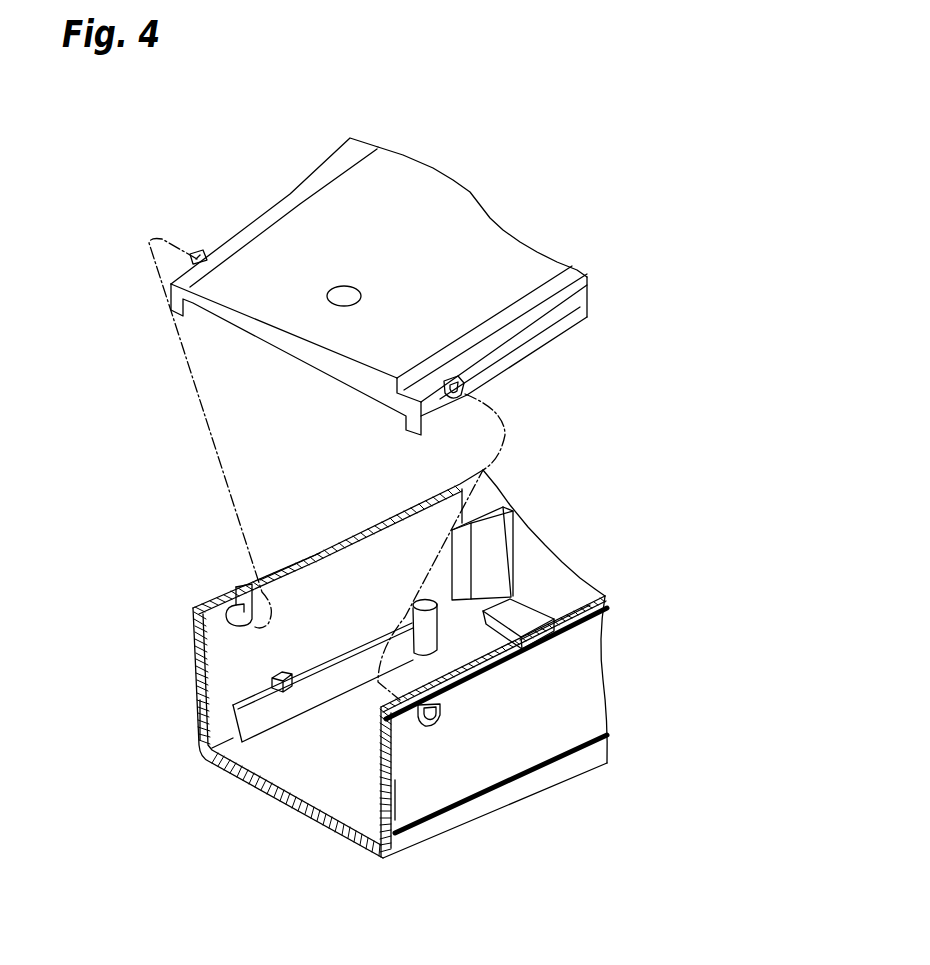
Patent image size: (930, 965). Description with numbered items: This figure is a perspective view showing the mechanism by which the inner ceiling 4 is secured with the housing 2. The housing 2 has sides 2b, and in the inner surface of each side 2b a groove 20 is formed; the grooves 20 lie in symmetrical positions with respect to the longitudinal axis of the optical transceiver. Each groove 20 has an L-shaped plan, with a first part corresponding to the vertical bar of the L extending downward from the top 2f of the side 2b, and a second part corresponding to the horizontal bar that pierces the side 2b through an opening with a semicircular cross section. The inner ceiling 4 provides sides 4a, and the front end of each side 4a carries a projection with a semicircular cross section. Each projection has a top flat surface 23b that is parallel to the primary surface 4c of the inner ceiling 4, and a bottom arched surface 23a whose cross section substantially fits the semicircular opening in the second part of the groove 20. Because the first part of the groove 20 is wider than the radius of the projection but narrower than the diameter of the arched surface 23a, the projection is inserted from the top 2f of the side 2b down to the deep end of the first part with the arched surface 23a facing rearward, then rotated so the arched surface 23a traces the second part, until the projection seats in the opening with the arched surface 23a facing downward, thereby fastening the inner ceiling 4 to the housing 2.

The inner ceiling 4 is at (316, 177).
The side of the inner ceiling 4a is at (573, 317).
The primary surface of the inner ceiling 4c is at (412, 192).
The top flat surface 23b is at (198, 259).
The bottom arched surface 23a is at (462, 396).
The housing 2 is at (507, 810).
The side of the housing 2b is at (190, 667).
The top of the side 2f is at (285, 563).
The groove 20 is at (246, 587).